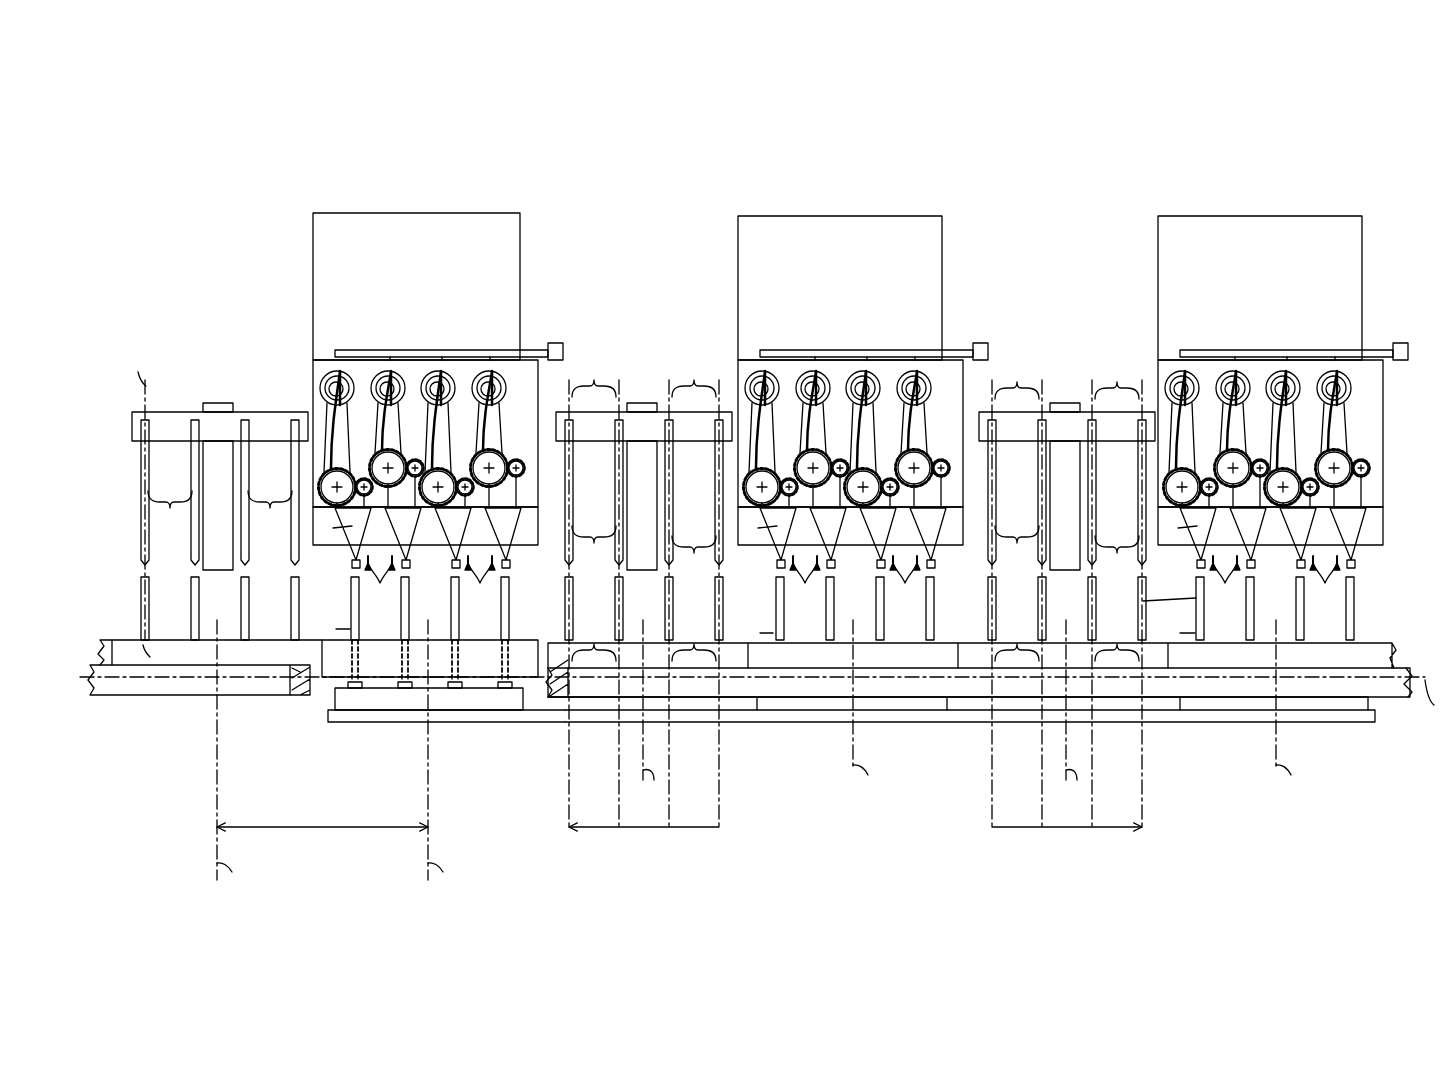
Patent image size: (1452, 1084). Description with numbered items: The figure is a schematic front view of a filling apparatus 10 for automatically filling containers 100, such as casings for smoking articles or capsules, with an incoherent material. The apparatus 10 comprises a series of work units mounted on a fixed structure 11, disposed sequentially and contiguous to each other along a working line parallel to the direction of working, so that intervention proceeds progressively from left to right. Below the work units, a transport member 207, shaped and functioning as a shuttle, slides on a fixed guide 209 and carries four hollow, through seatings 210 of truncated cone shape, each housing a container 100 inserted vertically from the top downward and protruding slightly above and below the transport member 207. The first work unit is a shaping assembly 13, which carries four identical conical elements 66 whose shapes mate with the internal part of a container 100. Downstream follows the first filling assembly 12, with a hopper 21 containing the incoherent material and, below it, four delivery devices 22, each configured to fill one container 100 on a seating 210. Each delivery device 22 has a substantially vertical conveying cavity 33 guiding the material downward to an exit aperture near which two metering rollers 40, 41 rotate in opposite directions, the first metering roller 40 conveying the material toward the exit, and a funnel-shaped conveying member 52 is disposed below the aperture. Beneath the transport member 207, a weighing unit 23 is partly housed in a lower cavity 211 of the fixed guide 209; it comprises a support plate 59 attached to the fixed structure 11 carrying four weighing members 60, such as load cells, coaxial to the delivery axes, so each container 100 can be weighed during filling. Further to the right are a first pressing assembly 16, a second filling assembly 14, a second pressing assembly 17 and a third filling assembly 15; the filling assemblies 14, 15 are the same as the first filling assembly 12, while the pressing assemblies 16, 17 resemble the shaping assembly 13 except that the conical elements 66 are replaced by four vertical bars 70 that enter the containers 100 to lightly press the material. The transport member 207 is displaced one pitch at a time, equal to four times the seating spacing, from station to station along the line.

The filling apparatus 10 is at (1380, 136).
The fixed structure 11 is at (1338, 722).
The first filling assembly 12 is at (486, 210).
The shaping assembly 13 is at (232, 375).
The second filling assembly 14 is at (910, 210).
The third filling assembly 15 is at (1330, 210).
The first pressing assembly 16 is at (657, 375).
The second pressing assembly 17 is at (1078, 377).
The hopper 21 is at (514, 250).
The delivery devices 22 is at (853, 583).
The weighing unit 23 is at (318, 704).
The conveying cavities 33 is at (440, 432).
The first metering roller 40 is at (494, 460).
The second metering roller 41 is at (520, 467).
The conveying member 52 is at (352, 548).
The support plate 59 is at (400, 710).
The weighing members 60 is at (350, 690).
The conical elements 66 is at (220, 511).
The vertical bars 70 is at (855, 549).
The containers 100 is at (142, 584).
The transport member 207 is at (126, 640).
The fixed guide 209 is at (120, 697).
The seatings 210 is at (348, 642).
The lower cavity 211 is at (545, 712).